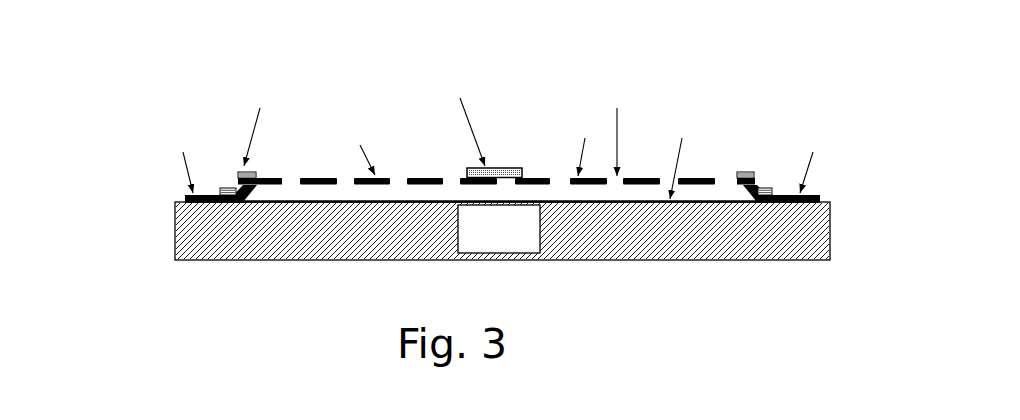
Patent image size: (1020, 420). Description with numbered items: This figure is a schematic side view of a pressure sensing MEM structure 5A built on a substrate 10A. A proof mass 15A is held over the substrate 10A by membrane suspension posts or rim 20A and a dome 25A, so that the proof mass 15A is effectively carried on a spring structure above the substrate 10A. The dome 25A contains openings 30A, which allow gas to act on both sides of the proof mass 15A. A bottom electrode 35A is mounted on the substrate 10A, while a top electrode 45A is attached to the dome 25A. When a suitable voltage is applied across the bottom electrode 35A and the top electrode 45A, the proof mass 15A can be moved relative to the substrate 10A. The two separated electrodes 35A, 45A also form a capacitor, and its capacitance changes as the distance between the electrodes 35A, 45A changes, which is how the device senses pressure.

The pressure sensing MEM structure 5A is at (130, 237).
The substrate 10A is at (175, 250).
The proof mass 15A is at (507, 167).
The membrane suspension post 20A is at (748, 171).
The dome 25A is at (318, 177).
The openings 30A is at (398, 186).
The bottom electrode 35A is at (632, 196).
The top electrode 45A is at (548, 187).